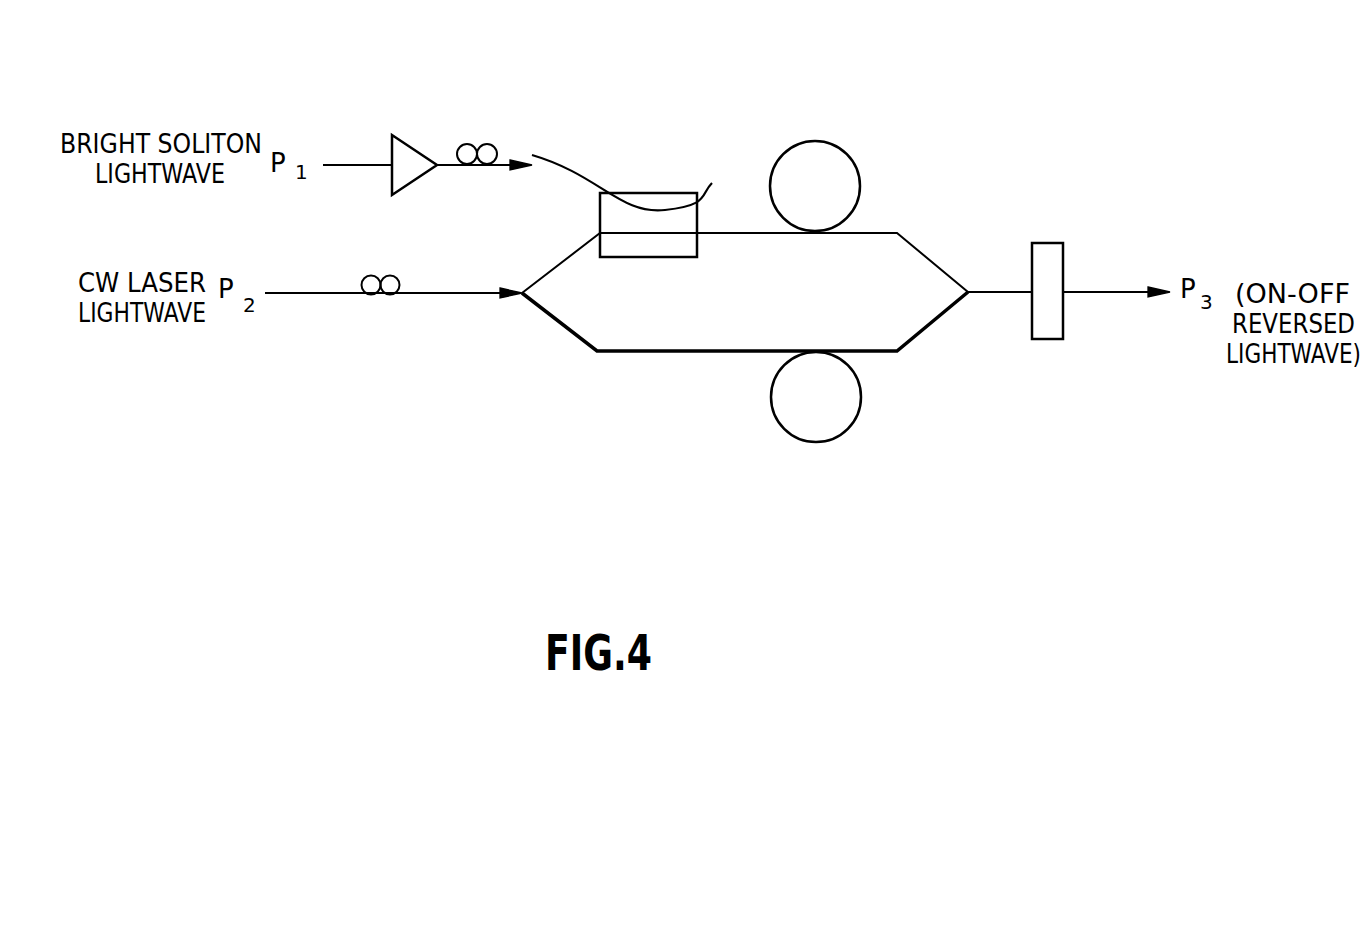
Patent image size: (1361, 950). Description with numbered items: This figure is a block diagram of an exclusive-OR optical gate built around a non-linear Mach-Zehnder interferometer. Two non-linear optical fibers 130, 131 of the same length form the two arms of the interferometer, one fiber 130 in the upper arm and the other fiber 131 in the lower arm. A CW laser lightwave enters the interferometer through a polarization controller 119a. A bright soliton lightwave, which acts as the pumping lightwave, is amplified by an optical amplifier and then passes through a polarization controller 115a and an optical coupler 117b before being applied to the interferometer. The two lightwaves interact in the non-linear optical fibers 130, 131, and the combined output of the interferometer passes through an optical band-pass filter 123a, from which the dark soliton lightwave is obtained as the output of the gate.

The polarization controller 115a is at (428, 210).
The optical coupler 117b is at (625, 192).
The polarization controller 119a is at (388, 296).
The non-linear optical fiber 130 is at (814, 140).
The non-linear optical fiber 131 is at (816, 443).
The optical band-pass filter 123a is at (1045, 340).